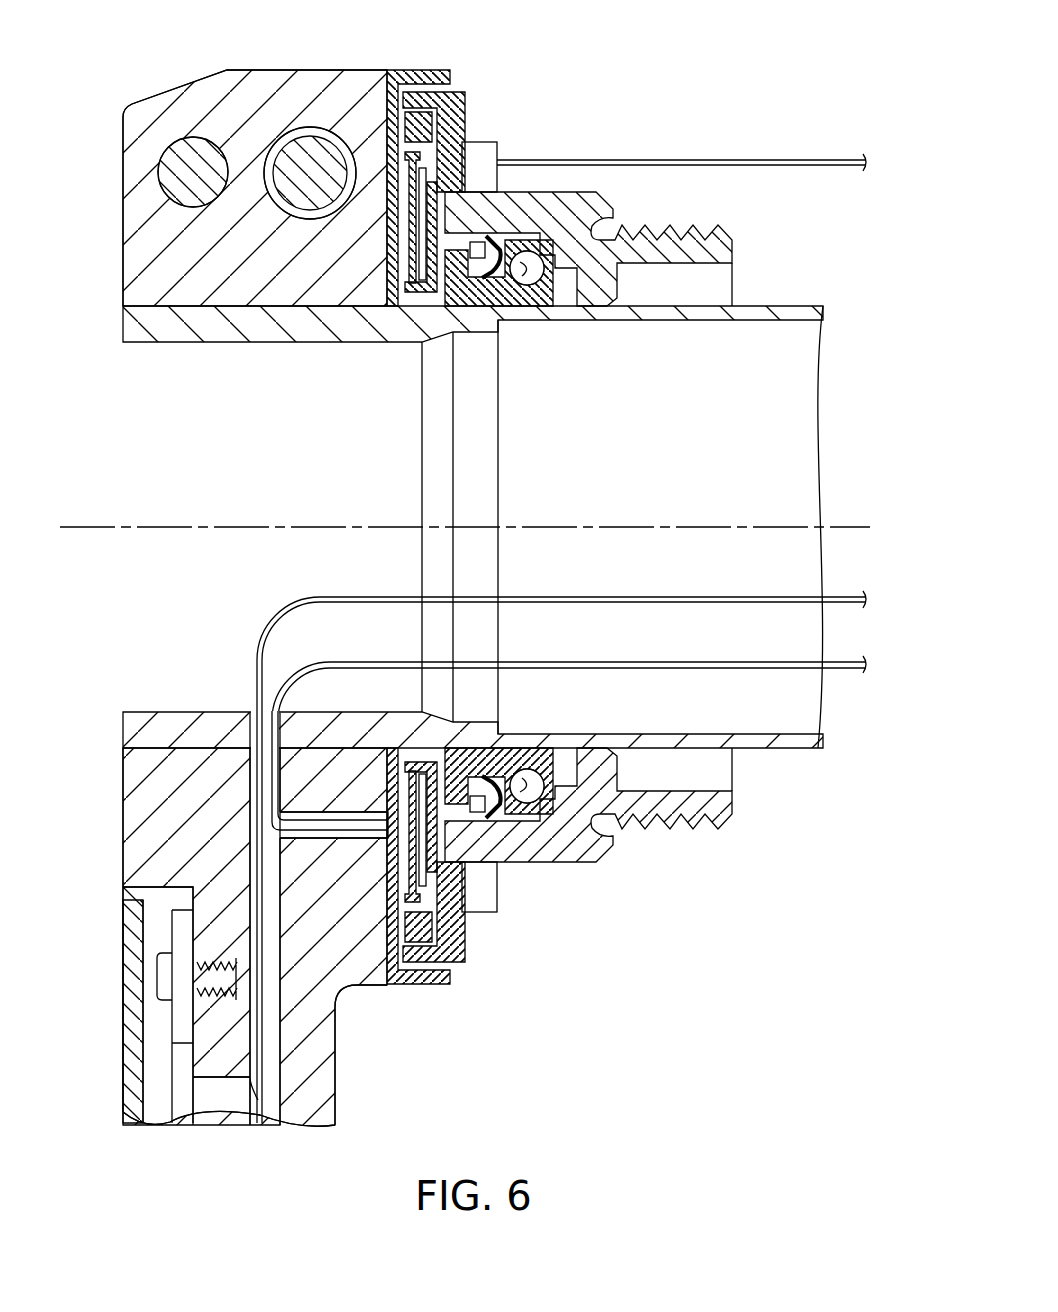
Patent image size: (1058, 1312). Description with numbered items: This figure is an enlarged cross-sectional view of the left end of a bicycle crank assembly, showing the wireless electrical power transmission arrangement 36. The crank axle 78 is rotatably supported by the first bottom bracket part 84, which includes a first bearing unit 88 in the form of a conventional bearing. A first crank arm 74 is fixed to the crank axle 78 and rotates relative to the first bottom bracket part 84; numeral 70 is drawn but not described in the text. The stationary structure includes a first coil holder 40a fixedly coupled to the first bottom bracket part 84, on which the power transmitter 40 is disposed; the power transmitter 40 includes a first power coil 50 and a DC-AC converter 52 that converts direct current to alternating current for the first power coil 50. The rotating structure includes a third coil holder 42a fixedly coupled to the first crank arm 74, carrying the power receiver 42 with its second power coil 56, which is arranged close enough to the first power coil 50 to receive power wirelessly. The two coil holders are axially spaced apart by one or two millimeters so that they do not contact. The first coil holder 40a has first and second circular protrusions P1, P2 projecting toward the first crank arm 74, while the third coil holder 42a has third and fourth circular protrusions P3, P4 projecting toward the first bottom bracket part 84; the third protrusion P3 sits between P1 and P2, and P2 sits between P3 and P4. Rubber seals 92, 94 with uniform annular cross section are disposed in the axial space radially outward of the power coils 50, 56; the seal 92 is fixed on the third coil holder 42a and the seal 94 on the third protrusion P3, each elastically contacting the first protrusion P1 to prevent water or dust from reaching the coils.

The wireless electrical power transmission arrangement 36 is at (533, 193).
The power transmitter 40 is at (495, 119).
The first coil holder 40a is at (466, 98).
The power receiver 42 is at (399, 158).
The third coil holder 42a is at (430, 70).
The first power coil 50 is at (430, 270).
The DC-AC converter 52 is at (481, 105).
The second power coil 56 is at (410, 240).
The bracket 70 is at (172, 1063).
The first crank arm 74 is at (338, 1085).
The crank axle 78 is at (787, 306).
The first bottom bracket part 84 is at (610, 200).
The first bearing unit 88 is at (536, 308).
The rubber seal 92 is at (432, 890).
The rubber seal 94 is at (435, 930).
The first circular protrusion P1 is at (400, 915).
The second circular protrusion P2 is at (392, 962).
The third circular protrusion P3 is at (465, 950).
The fourth circular protrusion P4 is at (455, 978).